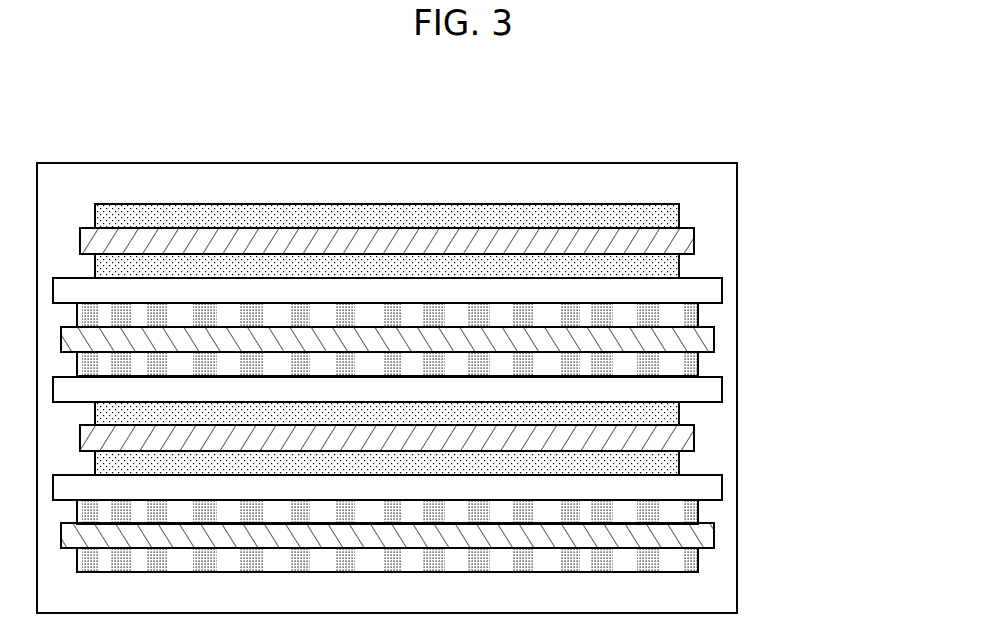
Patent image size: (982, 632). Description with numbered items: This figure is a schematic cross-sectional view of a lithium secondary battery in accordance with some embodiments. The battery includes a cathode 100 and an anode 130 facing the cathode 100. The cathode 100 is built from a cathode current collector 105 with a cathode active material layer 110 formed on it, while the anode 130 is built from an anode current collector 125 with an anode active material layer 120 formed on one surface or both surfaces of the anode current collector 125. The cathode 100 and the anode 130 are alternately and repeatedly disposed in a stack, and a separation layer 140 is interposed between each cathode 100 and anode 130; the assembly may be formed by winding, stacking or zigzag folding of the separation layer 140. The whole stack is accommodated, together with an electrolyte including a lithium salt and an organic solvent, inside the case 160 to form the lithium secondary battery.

The cathode 100 is at (483, 339).
The cathode current collector 105 is at (694, 236).
The cathode active material layer 110 is at (676, 215).
The anode active material layer 120 is at (698, 312).
The anode current collector 125 is at (714, 337).
The anode 130 is at (473, 437).
The separation layer 140 is at (592, 285).
The case 160 is at (737, 537).